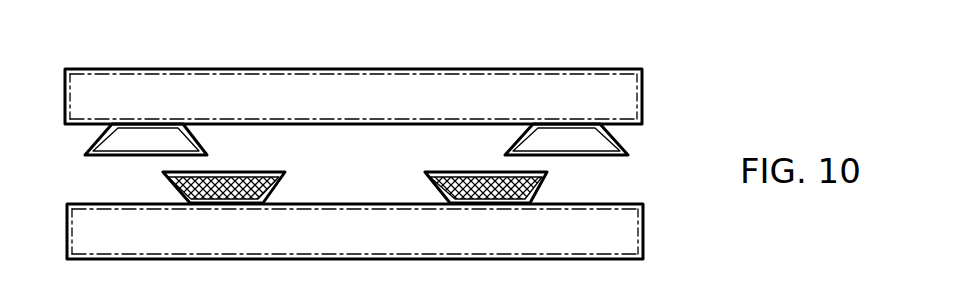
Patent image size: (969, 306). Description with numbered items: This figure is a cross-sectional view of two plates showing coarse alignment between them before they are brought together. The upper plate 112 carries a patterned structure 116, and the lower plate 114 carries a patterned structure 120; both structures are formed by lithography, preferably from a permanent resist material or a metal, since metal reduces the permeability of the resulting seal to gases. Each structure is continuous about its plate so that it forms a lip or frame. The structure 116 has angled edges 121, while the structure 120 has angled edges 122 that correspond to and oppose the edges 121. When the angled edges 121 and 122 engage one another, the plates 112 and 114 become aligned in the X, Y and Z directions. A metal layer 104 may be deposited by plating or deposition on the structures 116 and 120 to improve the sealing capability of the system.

The metal layer 104 is at (123, 160).
The plate 112 is at (630, 88).
The plate 114 is at (630, 227).
The patterned structure 116 is at (150, 135).
The patterned structure 120 is at (222, 195).
The angled edges 121 is at (97, 137).
The angled edges 122 is at (170, 195).